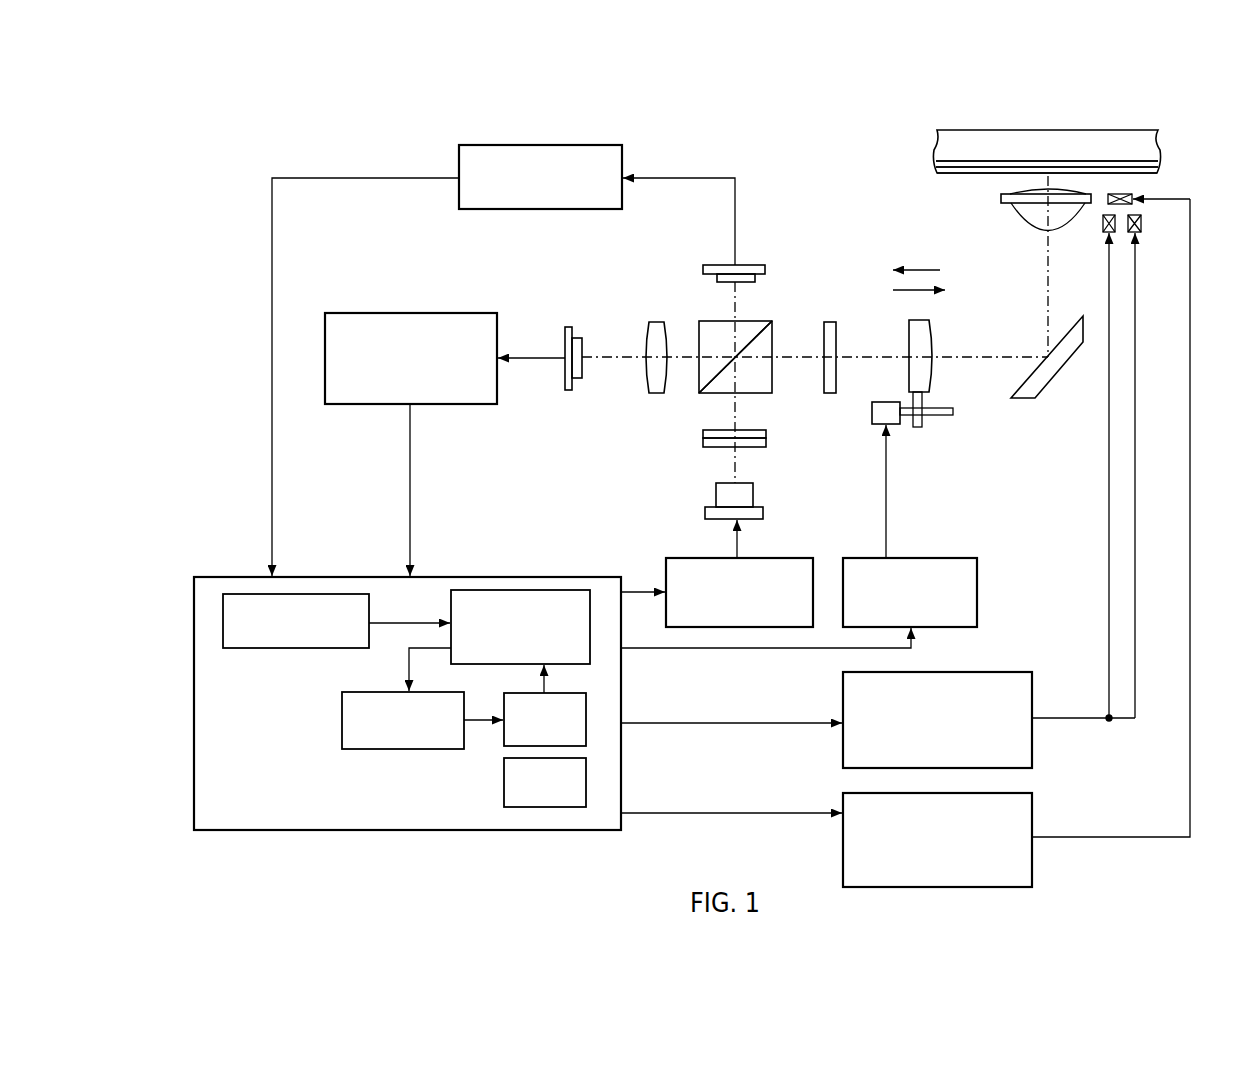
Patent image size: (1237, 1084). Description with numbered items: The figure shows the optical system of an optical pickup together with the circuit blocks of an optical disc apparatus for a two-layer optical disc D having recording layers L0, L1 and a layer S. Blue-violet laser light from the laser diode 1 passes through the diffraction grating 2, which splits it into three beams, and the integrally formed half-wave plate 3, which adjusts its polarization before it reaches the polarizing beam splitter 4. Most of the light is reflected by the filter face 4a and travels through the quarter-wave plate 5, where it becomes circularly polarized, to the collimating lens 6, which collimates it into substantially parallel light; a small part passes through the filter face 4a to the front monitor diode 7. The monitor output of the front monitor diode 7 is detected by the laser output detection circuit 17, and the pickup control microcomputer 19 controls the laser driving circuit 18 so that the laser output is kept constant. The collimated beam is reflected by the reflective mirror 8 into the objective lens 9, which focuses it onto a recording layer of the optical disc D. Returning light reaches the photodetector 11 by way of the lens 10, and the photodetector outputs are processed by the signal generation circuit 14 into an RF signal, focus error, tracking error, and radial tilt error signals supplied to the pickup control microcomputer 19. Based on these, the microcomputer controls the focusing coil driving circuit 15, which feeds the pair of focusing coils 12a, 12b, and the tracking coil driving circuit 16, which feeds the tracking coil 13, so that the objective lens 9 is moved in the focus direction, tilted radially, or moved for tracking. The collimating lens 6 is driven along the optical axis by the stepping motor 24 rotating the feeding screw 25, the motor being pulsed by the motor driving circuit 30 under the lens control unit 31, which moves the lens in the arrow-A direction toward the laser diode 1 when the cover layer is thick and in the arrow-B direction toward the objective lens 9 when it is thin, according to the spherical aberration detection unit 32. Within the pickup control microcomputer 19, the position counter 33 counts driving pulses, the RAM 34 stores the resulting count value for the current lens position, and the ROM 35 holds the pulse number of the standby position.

The laser diode 1 is at (716, 499).
The diffraction grating 2 is at (703, 445).
The half-wave plate 3 is at (703, 434).
The polarizing beam splitter 4 is at (758, 393).
The filter face 4a is at (758, 326).
The quarter-wave plate 5 is at (831, 322).
The collimating lens 6 is at (930, 323).
The front monitor diode 7 is at (720, 265).
The reflective mirror 8 is at (1025, 399).
The objective lens 9 is at (1032, 229).
The detection lens 10 is at (656, 322).
The photodetector 11 is at (569, 327).
The focusing coil 12a is at (1102, 232).
The focusing coil 12b is at (1141, 232).
The tracking coil 13 is at (1132, 196).
The signal generation circuit 14 is at (413, 313).
The focusing coil driving circuit 15 is at (1000, 672).
The tracking coil driving circuit 16 is at (1032, 812).
The laser output detection circuit 17 is at (548, 145).
The laser driving circuit 18 is at (782, 558).
The pickup control microcomputer 19 is at (552, 713).
The stepping motor 24 is at (872, 415).
The feeding screw 25 is at (938, 416).
The motor driving circuit 30 is at (930, 558).
The lens control unit 31 is at (530, 590).
The spherical aberration detection unit 32 is at (293, 594).
The position counter 33 is at (342, 718).
The RAM 34 is at (586, 715).
The ROM 35 is at (540, 807).
The optical disc D is at (1112, 136).
The recording layer L0 is at (940, 162).
The recording layer L1 is at (955, 168).
The substrate S is at (985, 175).
The arrow-A direction A is at (927, 272).
The arrow-B direction B is at (907, 291).